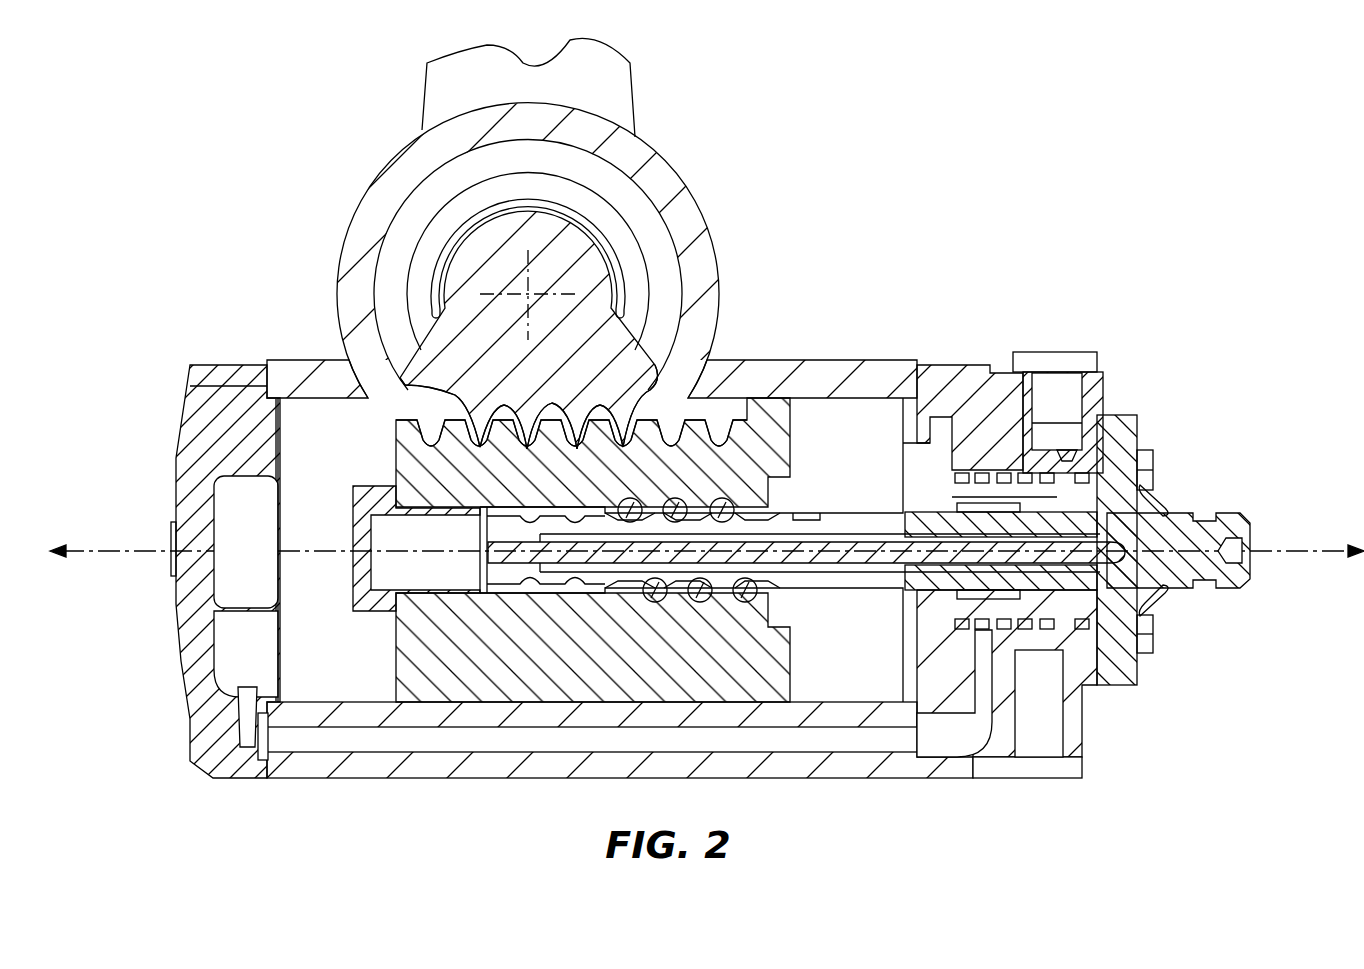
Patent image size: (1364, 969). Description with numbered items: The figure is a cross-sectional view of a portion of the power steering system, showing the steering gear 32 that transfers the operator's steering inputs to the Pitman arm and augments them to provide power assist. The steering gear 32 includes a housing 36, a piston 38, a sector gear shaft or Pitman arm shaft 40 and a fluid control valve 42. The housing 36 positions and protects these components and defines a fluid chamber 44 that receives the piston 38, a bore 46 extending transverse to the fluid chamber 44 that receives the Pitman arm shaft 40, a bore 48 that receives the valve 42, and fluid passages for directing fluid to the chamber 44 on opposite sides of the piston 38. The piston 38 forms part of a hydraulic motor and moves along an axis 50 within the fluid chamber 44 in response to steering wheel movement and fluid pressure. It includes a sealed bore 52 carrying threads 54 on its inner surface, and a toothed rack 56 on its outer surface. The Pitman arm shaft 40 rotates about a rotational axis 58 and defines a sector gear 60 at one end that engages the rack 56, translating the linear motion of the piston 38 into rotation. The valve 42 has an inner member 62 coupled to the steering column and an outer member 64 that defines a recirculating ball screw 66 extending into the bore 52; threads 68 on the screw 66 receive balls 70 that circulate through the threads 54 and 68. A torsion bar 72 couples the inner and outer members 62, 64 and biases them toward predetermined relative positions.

The steering gear 32 is at (333, 93).
The housing 36 is at (472, 778).
The piston 38 is at (395, 675).
The Pitman arm shaft 40 is at (577, 240).
The fluid control valve 42 is at (1195, 515).
The fluid chamber 44 is at (316, 425).
The bore 46 is at (417, 250).
The bore 48 is at (993, 468).
The axis 50 is at (128, 553).
The bore 52 is at (497, 592).
The threads 54 is at (650, 598).
The toothed rack 56 is at (660, 430).
The rotational axis 58 is at (545, 290).
The sector gear 60 is at (663, 363).
The inner member 62 is at (1183, 587).
The outer member 64 is at (1060, 623).
The recirculating ball screw 66 is at (833, 513).
The threads 68 is at (680, 503).
The balls 70 is at (743, 588).
The torsion bar 72 is at (807, 560).